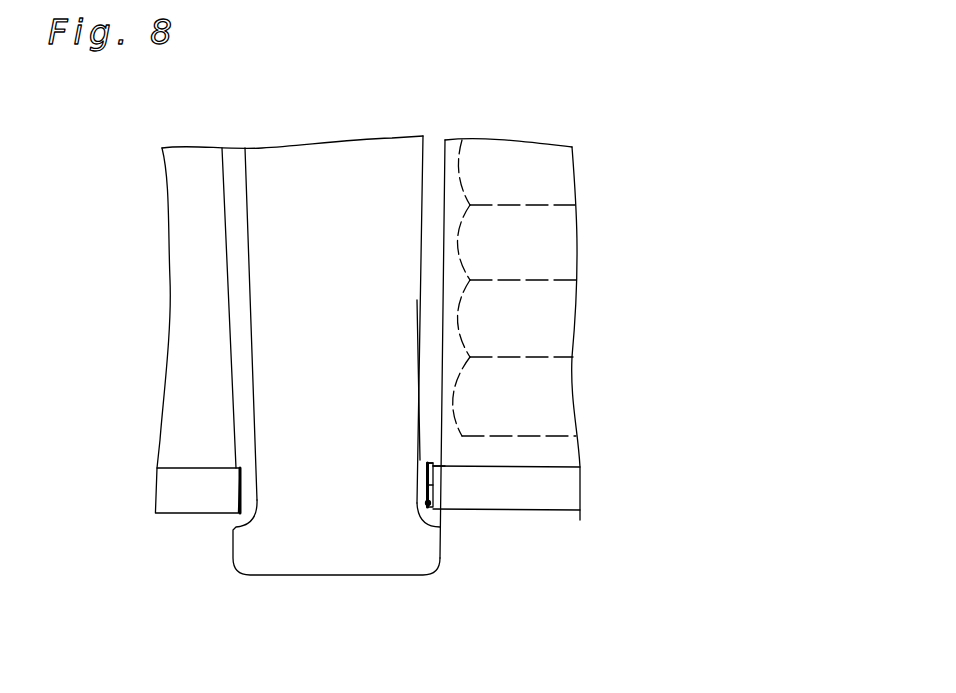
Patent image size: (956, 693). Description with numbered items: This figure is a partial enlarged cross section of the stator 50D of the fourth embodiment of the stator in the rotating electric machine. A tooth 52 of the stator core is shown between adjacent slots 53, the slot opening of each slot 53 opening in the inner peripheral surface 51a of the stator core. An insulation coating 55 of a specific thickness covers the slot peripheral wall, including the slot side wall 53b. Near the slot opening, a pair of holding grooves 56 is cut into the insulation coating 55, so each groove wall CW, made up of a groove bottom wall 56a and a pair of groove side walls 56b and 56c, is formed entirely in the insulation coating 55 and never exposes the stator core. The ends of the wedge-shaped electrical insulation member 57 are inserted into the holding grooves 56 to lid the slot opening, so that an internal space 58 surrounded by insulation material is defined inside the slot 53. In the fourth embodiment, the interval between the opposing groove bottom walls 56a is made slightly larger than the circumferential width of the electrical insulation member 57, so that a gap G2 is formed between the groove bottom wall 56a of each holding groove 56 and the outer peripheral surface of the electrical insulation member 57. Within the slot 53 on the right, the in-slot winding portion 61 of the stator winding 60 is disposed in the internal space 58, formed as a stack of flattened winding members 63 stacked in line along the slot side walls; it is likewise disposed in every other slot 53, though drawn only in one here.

The stator 50D is at (430, 122).
The stator winding 60 is at (560, 172).
The winding member 63 is at (558, 253).
The in-slot winding portion 61 is at (558, 325).
The slot 53 is at (570, 450).
The electrical insulation member 57 is at (568, 497).
The internal space 58 is at (446, 203).
The insulation coating 55 is at (240, 328).
The slot side wall 53b is at (420, 383).
The groove side wall 56b is at (427, 464).
The groove side wall 56c is at (423, 498).
The holding groove 56 is at (433, 484).
The groove bottom wall 56a is at (437, 500).
The groove wall CW is at (433, 475).
The gap G2 is at (247, 498).
The tooth 52 is at (318, 552).
The inner peripheral surface 51a is at (368, 577).